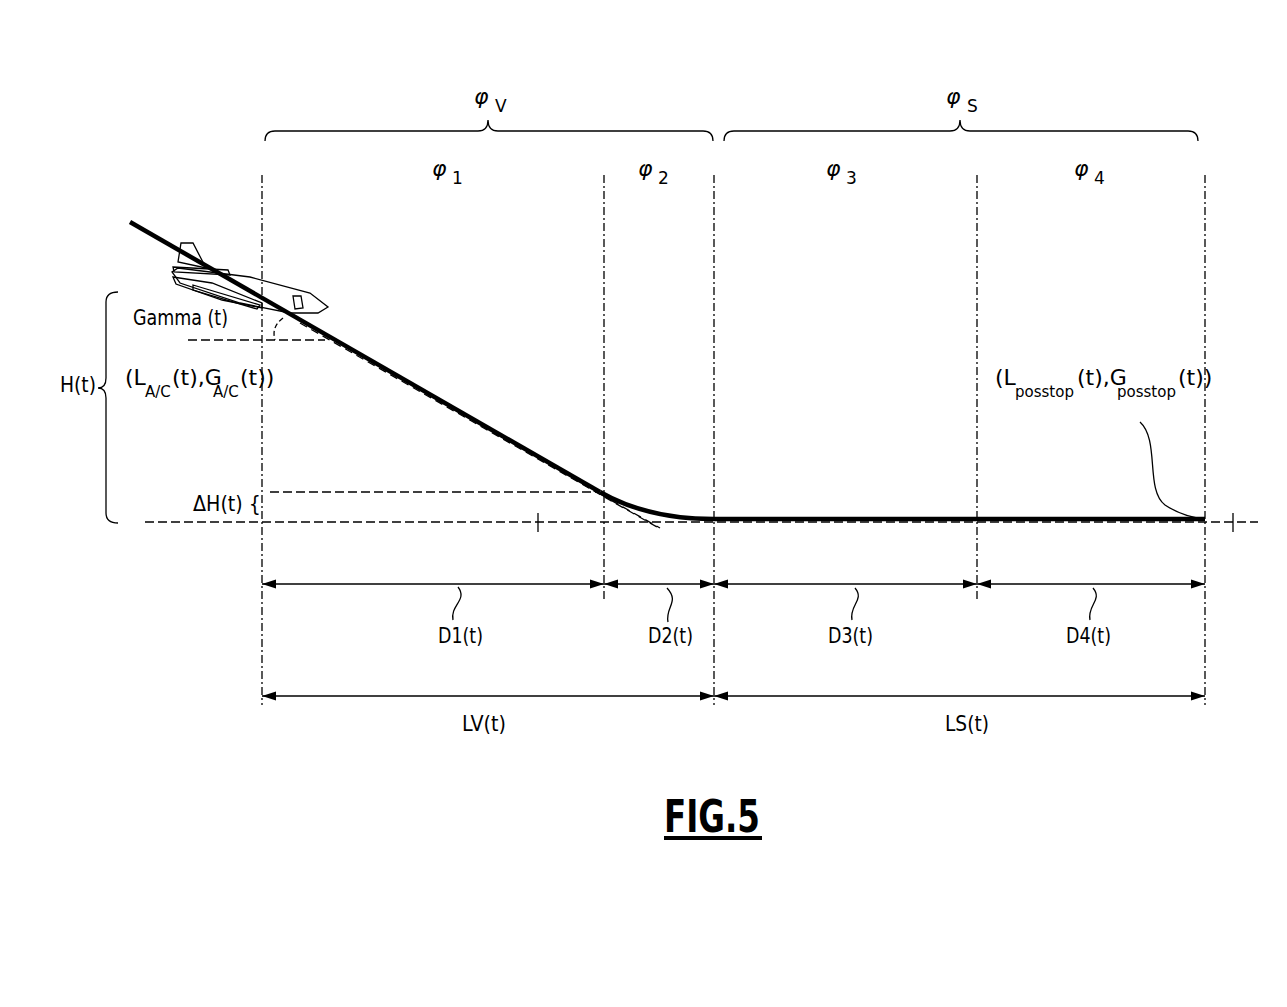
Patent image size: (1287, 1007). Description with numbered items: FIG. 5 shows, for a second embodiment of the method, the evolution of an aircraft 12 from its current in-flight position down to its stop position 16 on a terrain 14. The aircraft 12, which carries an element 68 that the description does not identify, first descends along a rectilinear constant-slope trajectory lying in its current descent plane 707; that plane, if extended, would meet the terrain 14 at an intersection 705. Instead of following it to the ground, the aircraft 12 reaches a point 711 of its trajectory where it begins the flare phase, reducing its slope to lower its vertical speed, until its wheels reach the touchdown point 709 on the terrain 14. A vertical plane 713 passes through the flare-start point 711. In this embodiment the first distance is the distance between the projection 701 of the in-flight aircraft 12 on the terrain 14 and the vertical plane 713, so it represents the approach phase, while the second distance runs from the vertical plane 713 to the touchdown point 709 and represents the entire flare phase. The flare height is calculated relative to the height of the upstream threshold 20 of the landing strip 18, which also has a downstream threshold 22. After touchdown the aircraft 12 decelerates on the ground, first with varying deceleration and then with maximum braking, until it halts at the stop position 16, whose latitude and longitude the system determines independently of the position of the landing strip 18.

The aircraft 12 is at (270, 260).
The aircraft flight management system 68 is at (240, 280).
The terrain 14 is at (380, 562).
The stop position 16 is at (1205, 519).
The landing strip 18 is at (904, 520).
The upstream threshold 20 is at (538, 524).
The downstream threshold 22 is at (1233, 525).
The projection 701 is at (262, 524).
The intersection 705 is at (657, 521).
The current descent plane 707 is at (412, 383).
The touchdown point of the wheels 709 is at (716, 518).
The point of the trajectory where the flare phase begins 711 is at (600, 492).
The vertical plane 713 is at (605, 280).